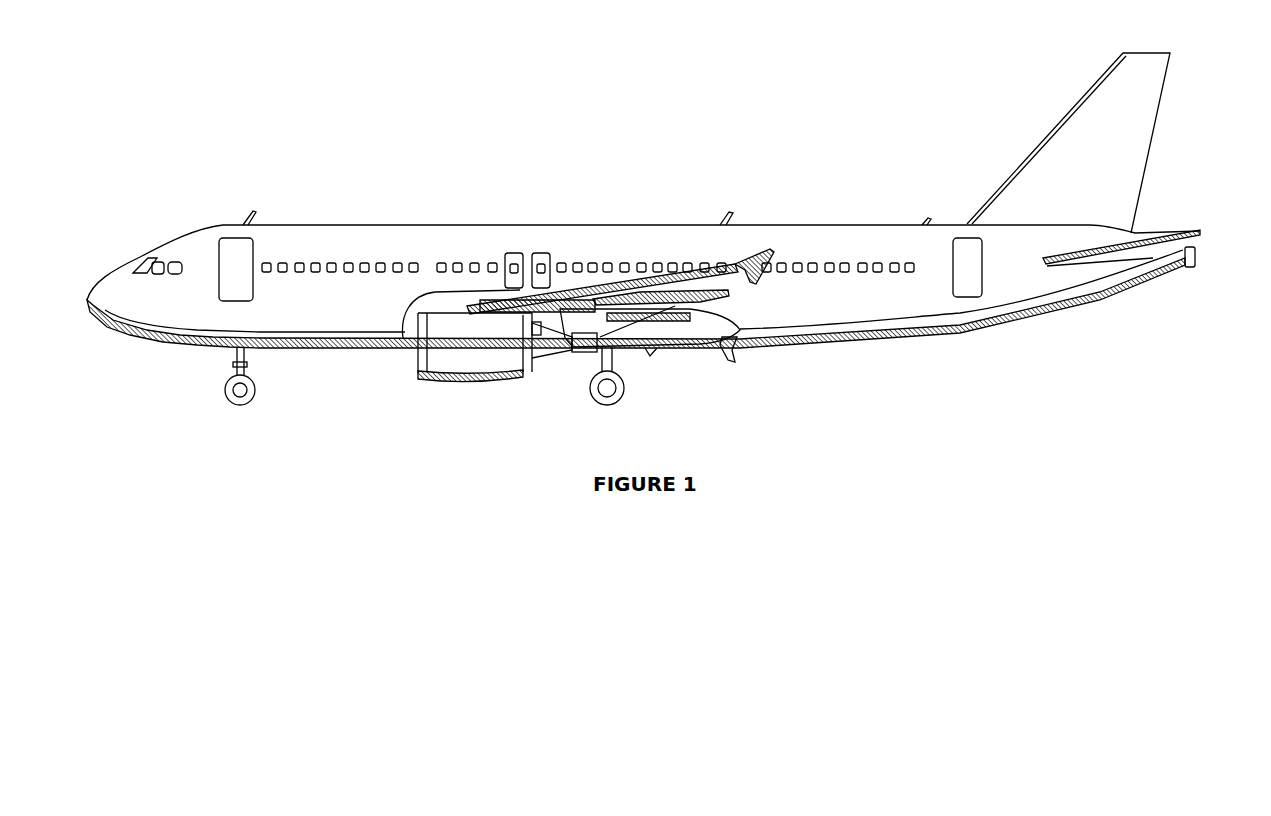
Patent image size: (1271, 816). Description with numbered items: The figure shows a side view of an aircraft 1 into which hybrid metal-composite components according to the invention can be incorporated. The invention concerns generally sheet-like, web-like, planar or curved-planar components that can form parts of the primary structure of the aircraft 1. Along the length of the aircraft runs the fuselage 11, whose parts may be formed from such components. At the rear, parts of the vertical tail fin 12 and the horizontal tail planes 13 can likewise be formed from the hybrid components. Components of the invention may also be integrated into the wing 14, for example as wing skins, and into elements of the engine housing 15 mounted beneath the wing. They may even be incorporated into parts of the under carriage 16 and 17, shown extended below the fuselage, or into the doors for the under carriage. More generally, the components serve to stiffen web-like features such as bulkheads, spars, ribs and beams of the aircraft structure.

The aircraft 1 is at (295, 170).
The fuselage 11 is at (865, 240).
The vertical tail fin 12 is at (1080, 133).
The horizontal tail planes 13 is at (1147, 250).
The wing 14 is at (580, 298).
The engine housing 15 is at (463, 357).
The under carriage 16 is at (272, 376).
The under carriage 17 is at (635, 383).